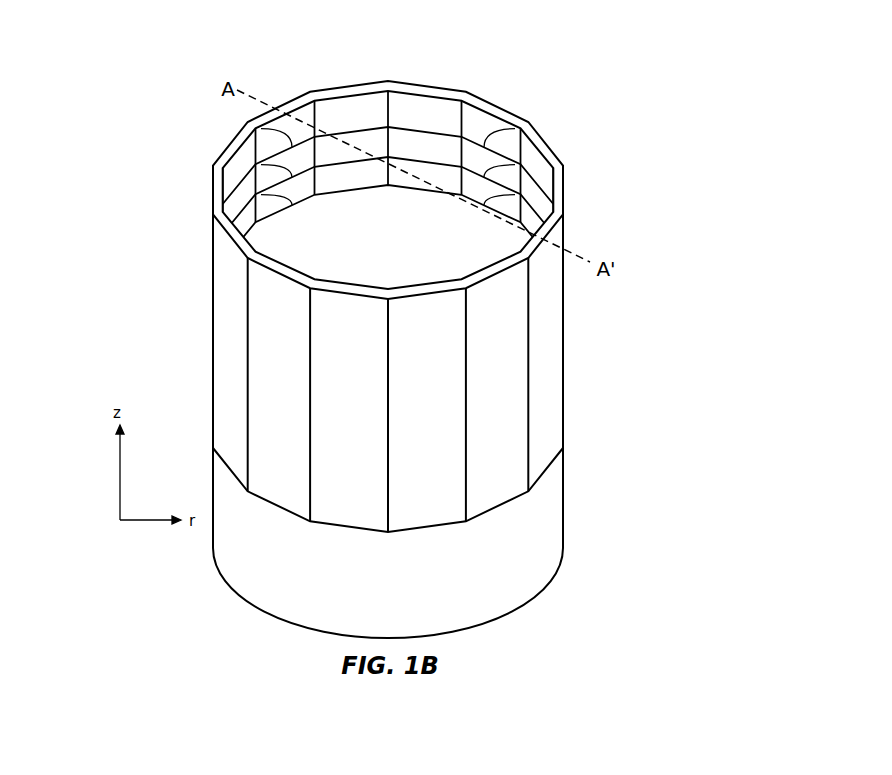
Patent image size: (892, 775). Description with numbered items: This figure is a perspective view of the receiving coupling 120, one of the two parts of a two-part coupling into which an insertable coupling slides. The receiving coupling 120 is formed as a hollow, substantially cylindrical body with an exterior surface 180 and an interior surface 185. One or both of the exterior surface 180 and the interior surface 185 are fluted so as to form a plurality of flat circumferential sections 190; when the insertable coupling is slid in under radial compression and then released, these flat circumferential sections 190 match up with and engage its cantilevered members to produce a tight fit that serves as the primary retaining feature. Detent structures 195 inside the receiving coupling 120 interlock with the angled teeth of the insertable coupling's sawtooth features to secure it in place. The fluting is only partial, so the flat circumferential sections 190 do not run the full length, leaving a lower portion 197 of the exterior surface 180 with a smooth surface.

The receiving coupling 120 is at (488, 78).
The exterior surface 180 is at (510, 431).
The interior surface 185 is at (486, 150).
The flat circumferential sections 190 is at (422, 290).
The detent structures 195 is at (276, 152).
The lower portion 197 is at (532, 543).